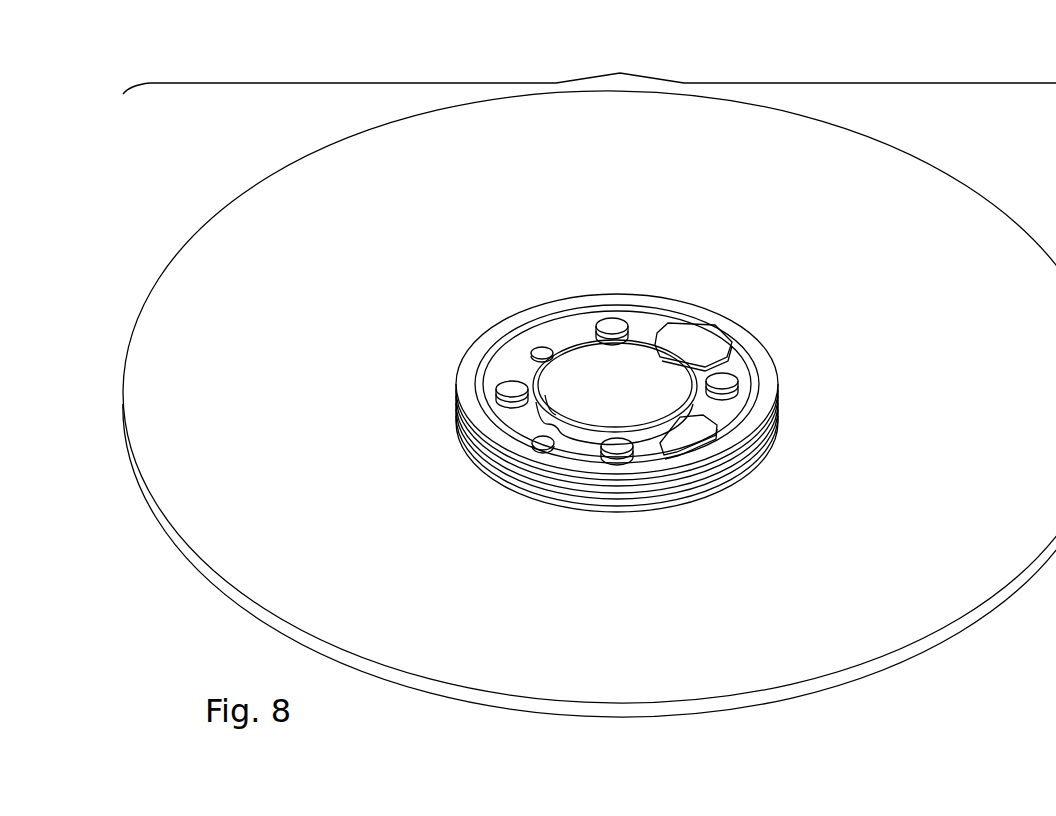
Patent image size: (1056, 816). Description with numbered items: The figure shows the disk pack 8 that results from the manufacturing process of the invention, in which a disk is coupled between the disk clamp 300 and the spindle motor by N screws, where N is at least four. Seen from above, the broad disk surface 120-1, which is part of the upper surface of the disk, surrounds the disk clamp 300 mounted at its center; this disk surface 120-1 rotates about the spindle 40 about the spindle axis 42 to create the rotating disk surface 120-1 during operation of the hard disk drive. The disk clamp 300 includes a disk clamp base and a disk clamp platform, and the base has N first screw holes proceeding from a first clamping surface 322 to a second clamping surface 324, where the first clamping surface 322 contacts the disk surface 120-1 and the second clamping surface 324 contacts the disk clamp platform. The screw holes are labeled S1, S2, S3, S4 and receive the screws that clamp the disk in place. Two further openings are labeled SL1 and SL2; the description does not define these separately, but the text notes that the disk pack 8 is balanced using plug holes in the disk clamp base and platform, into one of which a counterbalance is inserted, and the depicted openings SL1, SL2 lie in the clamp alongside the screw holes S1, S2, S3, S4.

The disk pack 8 is at (589, 72).
The disk surface 120-1 is at (437, 614).
The disk clamp 300 is at (650, 397).
The first clamping surface 322 is at (787, 403).
The second clamping surface 324 is at (556, 300).
The spindle 40 is at (664, 401).
The spindle axis 42 is at (627, 401).
The screw hole S1 is at (497, 402).
The screw hole S2 is at (594, 333).
The screw hole S3 is at (730, 373).
The screw hole S4 is at (604, 436).
The slot 1 SL1 is at (532, 356).
The slot 2 SL2 is at (543, 451).